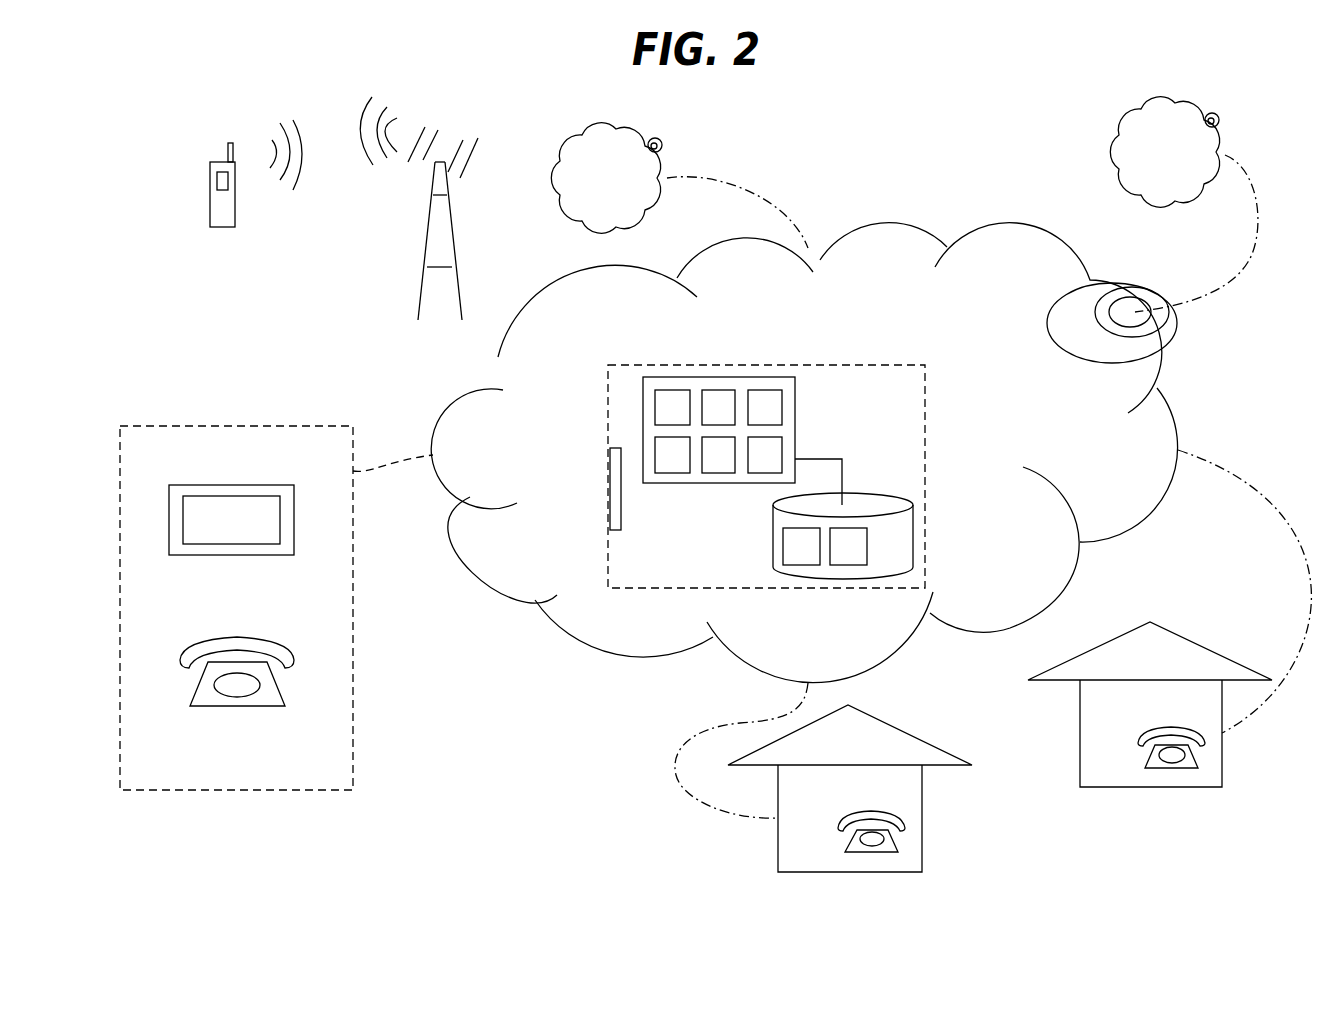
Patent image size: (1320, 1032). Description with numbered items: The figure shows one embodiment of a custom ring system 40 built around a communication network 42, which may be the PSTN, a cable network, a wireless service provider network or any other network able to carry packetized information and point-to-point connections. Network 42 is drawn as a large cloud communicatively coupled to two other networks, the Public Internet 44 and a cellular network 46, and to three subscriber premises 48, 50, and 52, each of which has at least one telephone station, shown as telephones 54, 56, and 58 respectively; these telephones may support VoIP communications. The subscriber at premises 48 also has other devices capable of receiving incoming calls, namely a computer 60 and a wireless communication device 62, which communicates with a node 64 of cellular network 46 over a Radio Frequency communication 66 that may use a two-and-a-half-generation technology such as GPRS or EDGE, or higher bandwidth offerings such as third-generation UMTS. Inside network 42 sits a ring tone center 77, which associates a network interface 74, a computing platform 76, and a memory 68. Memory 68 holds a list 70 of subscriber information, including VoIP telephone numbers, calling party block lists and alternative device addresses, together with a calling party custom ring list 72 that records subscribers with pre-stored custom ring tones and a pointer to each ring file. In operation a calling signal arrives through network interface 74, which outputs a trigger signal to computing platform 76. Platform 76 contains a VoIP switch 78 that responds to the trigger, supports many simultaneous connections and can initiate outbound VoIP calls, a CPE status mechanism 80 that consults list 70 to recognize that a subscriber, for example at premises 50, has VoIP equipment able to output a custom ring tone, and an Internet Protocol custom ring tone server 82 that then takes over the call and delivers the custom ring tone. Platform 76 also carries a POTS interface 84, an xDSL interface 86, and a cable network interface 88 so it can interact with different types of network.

The custom ring system 40 is at (888, 128).
The communication network 42 is at (1041, 421).
The Public Internet 44 is at (1144, 163).
The cellular network 46 is at (587, 189).
The premises 48 is at (333, 790).
The premises 50 is at (775, 848).
The premises 52 is at (1077, 717).
The telephone 54 is at (222, 704).
The telephone 56 is at (838, 830).
The telephone 58 is at (1138, 758).
The computer 60 is at (228, 530).
The wireless communication device 62 is at (208, 229).
The node 64 is at (420, 288).
The Radio Frequency communication 66 is at (318, 156).
The memory 68 is at (881, 551).
The list 70 is at (790, 559).
The calling party custom ring list 72 is at (837, 559).
The network interface 74 is at (598, 458).
The computing platform 76 is at (722, 487).
The ring tone center 77 is at (925, 374).
The VoIP switch 78 is at (661, 419).
The CPE status mechanism 80 is at (707, 419).
The Internet Protocol custom ring tone server 82 is at (754, 419).
The POTS interface 84 is at (661, 467).
The xDSL interface 86 is at (707, 467).
The cable network interface 88 is at (754, 467).